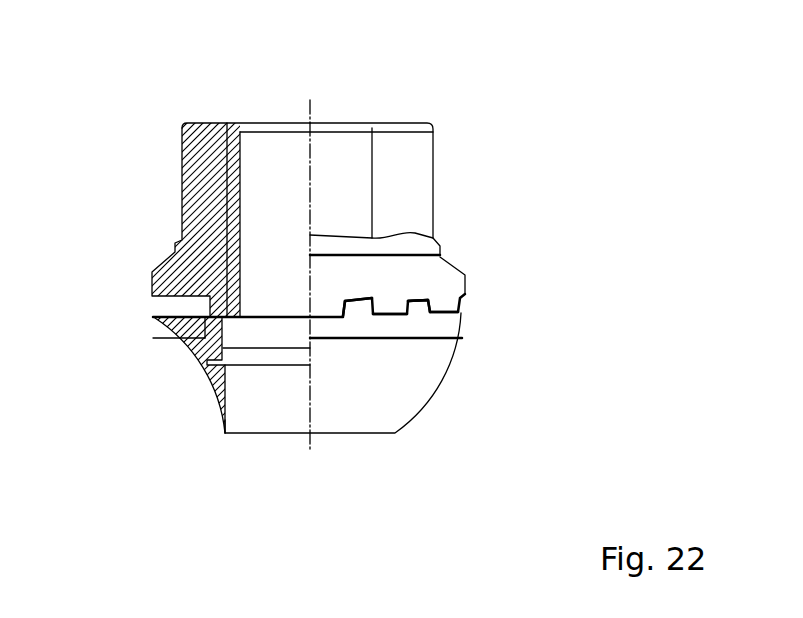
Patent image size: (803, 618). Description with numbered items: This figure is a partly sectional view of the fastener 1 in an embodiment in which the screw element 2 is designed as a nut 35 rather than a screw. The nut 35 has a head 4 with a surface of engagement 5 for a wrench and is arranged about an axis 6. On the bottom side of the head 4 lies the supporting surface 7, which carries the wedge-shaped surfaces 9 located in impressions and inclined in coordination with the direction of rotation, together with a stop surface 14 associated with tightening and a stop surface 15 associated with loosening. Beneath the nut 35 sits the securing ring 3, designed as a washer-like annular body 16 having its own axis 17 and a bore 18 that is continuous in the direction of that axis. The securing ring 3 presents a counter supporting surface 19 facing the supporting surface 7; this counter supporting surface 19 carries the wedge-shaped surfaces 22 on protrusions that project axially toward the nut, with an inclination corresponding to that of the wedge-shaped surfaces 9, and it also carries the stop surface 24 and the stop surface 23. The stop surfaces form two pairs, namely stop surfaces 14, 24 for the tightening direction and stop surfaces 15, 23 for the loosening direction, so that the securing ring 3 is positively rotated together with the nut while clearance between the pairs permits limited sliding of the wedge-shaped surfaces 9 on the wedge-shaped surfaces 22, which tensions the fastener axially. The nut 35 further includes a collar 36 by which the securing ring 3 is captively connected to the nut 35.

The fastener 1 is at (472, 102).
The screw element 2 is at (309, 280).
The nut 35 is at (437, 195).
The securing ring 3 is at (309, 313).
The annular body 16 is at (425, 380).
The head 4 is at (375, 142).
The surface of engagement 5 is at (387, 147).
The axis 6 is at (342, 240).
The axis 17 is at (310, 117).
The supporting surface 7 is at (477, 308).
The counter supporting surface 19 is at (481, 307).
The wedge-shaped surfaces 9 is at (418, 288).
The stop surface 14 is at (366, 303).
The stop surface 15 is at (395, 305).
The bore 18 is at (226, 414).
The wedge-shaped surfaces 22 is at (423, 323).
The stop surface 23 is at (412, 305).
The stop surface 24 is at (362, 307).
The collar 36 is at (153, 339).